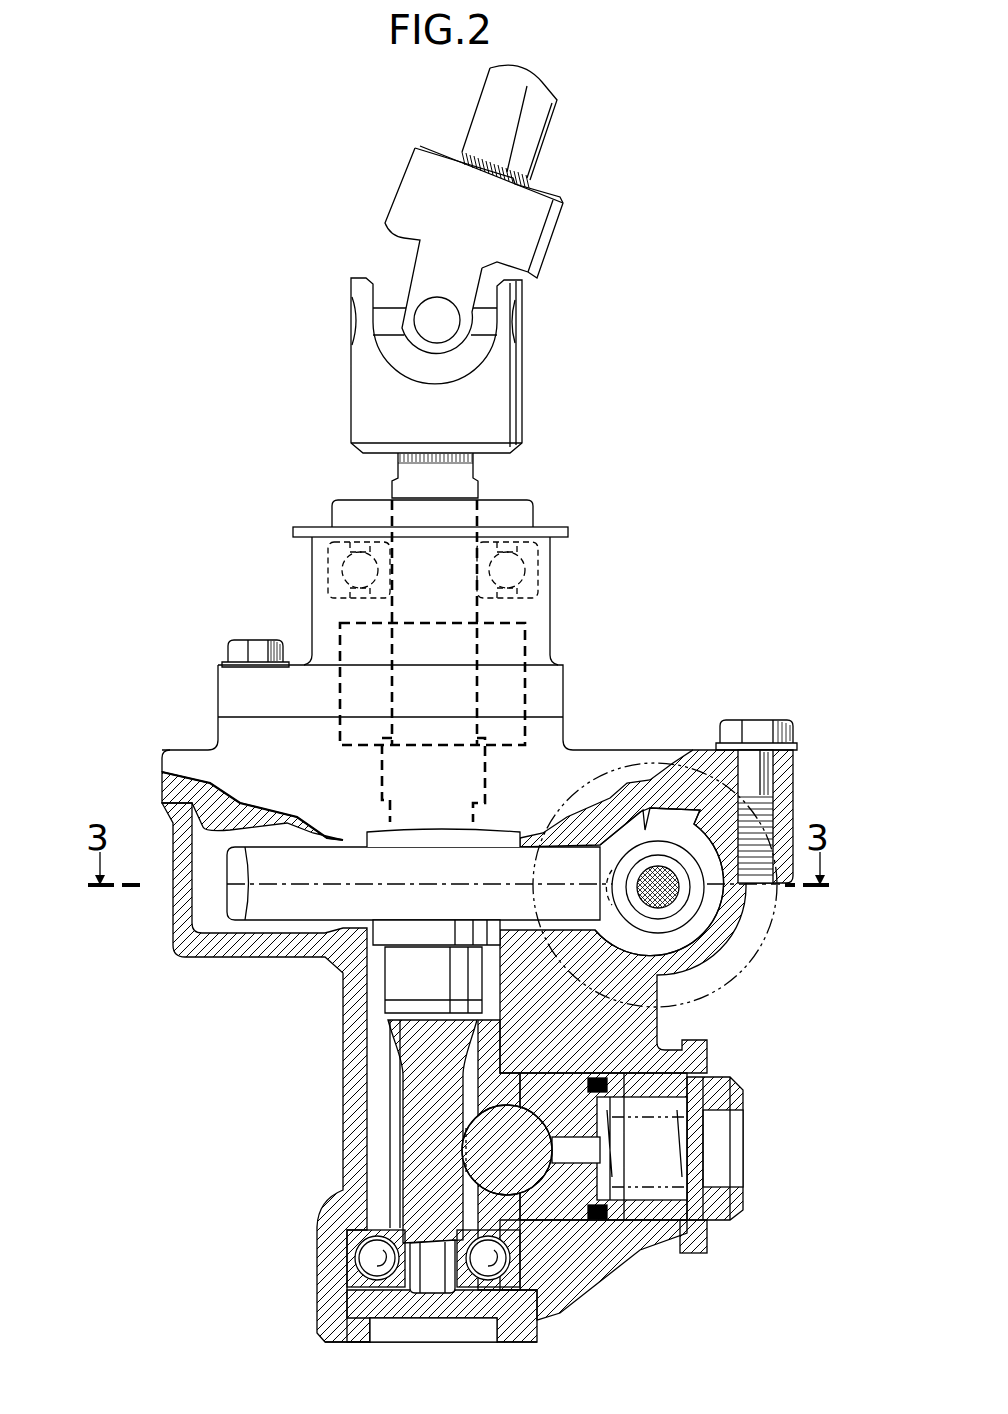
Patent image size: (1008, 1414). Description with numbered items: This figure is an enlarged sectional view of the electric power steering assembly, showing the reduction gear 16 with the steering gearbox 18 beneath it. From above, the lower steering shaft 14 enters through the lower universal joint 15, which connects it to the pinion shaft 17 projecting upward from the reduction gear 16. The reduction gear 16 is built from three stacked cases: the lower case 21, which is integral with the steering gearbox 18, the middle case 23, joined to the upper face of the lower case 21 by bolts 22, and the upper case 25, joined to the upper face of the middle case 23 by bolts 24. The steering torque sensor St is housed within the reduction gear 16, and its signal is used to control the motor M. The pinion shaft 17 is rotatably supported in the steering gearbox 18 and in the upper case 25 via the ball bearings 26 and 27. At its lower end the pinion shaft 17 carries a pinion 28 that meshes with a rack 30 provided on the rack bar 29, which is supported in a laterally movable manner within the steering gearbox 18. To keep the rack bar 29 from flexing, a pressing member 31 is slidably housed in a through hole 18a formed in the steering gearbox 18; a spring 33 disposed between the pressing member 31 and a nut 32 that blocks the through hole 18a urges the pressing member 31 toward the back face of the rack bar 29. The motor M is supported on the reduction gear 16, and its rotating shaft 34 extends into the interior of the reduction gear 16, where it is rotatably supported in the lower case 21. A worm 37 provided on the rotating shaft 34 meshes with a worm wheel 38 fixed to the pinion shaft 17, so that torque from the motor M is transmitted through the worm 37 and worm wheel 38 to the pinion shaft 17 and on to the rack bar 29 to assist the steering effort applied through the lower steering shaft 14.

The lower steering shaft 14 is at (530, 130).
The lower universal joint 15 is at (358, 245).
The reduction gear 16 is at (178, 735).
The pinion shaft 17 is at (502, 768).
The steering gearbox 18 is at (328, 1170).
The through hole 18a is at (555, 1078).
The lower case 21 is at (260, 953).
The bolts 22 is at (758, 732).
The middle case 23 is at (273, 773).
The bolts 24 is at (250, 647).
The upper case 25 is at (335, 615).
The ball bearing 26 is at (367, 1258).
The ball bearing 27 is at (513, 573).
The pinion 28 is at (392, 1148).
The rack bar 29 is at (497, 1090).
The rack 30 is at (463, 1113).
The pressing member 31 is at (567, 1213).
The nut 32 is at (703, 1102).
The spring 33 is at (695, 1180).
The rotating shaft 34 is at (673, 892).
The worm 37 is at (653, 850).
The worm wheel 38 is at (295, 857).
The steering torque sensor St is at (527, 638).
The motor M is at (733, 980).